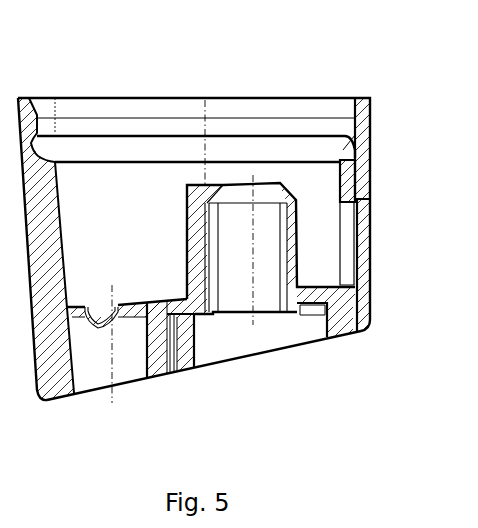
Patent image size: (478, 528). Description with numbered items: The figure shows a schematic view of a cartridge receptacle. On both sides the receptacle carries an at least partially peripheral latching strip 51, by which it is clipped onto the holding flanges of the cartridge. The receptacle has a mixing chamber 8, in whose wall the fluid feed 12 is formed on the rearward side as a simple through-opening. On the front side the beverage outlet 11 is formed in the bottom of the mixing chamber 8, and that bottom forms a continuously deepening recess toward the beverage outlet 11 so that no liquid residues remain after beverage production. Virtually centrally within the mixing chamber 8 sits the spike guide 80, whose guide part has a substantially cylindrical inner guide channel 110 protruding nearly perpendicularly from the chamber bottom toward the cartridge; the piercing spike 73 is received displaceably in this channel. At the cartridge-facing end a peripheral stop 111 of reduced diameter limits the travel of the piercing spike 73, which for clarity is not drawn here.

The latching strip 51 is at (33, 98).
The mixing chamber 8 is at (112, 200).
The peripheral stop 111 is at (283, 186).
The spike guide 80 is at (340, 215).
The fluid feed 12 is at (356, 258).
The guide channel 110 is at (368, 307).
The beverage outlet 11 is at (127, 384).
The piercing spike 73 is at (285, 353).